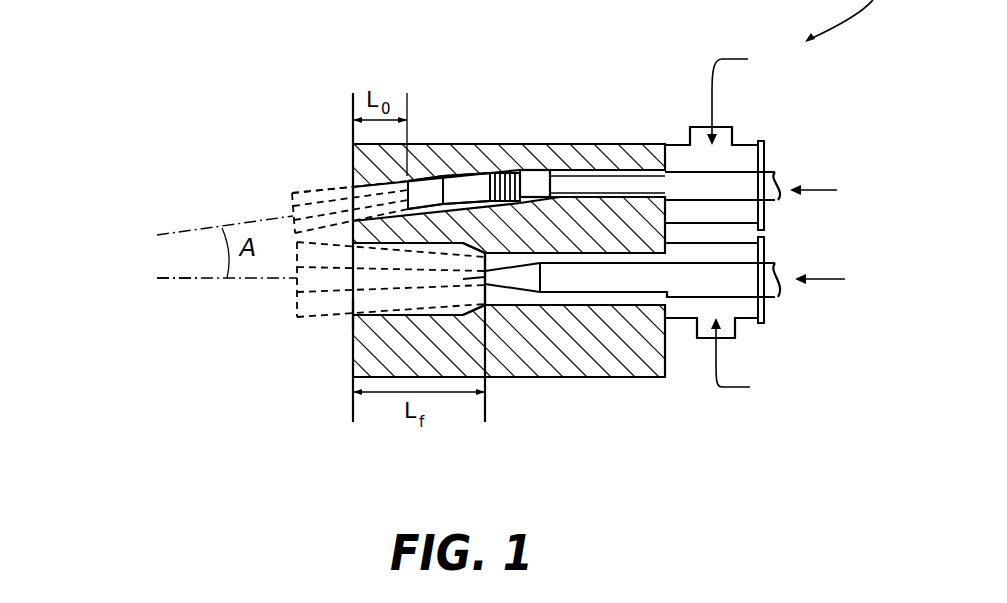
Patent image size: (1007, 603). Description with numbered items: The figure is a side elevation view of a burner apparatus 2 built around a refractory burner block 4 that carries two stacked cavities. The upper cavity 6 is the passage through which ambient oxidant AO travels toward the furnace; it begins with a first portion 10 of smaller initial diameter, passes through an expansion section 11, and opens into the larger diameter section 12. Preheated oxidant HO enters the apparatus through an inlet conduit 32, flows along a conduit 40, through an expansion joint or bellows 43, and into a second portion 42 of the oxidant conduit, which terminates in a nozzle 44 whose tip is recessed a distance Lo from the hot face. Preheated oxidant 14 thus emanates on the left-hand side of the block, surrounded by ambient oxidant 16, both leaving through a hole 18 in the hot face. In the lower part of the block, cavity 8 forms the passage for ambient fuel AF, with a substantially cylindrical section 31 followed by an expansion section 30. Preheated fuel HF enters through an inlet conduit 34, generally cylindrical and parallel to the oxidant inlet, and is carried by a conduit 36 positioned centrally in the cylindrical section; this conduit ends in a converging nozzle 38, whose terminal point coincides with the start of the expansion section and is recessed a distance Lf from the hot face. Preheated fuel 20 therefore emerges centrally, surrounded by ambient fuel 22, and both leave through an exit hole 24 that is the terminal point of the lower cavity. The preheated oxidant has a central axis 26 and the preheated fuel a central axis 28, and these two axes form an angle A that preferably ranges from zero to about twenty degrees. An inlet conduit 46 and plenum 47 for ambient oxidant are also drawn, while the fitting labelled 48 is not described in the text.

The burner apparatus 2 is at (846, 21).
The refractory burner block 4 is at (612, 377).
The upper cavity 6 is at (455, 173).
The cavity 8 is at (387, 317).
The first portion of cavity 10 is at (610, 170).
The expansion section 11 is at (562, 168).
The larger diameter section 12 is at (522, 170).
The preheated oxidant 14 is at (292, 211).
The ambient oxidant 16 is at (307, 180).
The hole 18 is at (352, 188).
The preheated fuel 20 is at (293, 280).
The ambient fuel 22 is at (312, 318).
The exit hole 24 is at (352, 313).
The central axis 26 is at (172, 233).
The central axis 28 is at (172, 278).
The expansion section 30 is at (516, 285).
The substantially cylindrical section 31 is at (637, 305).
The inlet conduit 32 is at (775, 173).
The inlet conduit 34 is at (770, 298).
The conduit 36 is at (597, 292).
The nozzle 38 is at (490, 311).
The conduit 40 is at (638, 176).
The second portion of the preheated oxidant conduit 42 is at (478, 174).
The expansion joint or bellows 43 is at (498, 172).
The nozzle 44 is at (423, 176).
The inlet conduit 46 is at (735, 137).
The plenum 47 is at (752, 140).
The input port fitting 48 is at (742, 328).
The ambient oxidant AO is at (746, 95).
The ambient fuel AF is at (748, 359).
The preheated oxidant HO is at (835, 190).
The preheated fuel HF is at (839, 280).